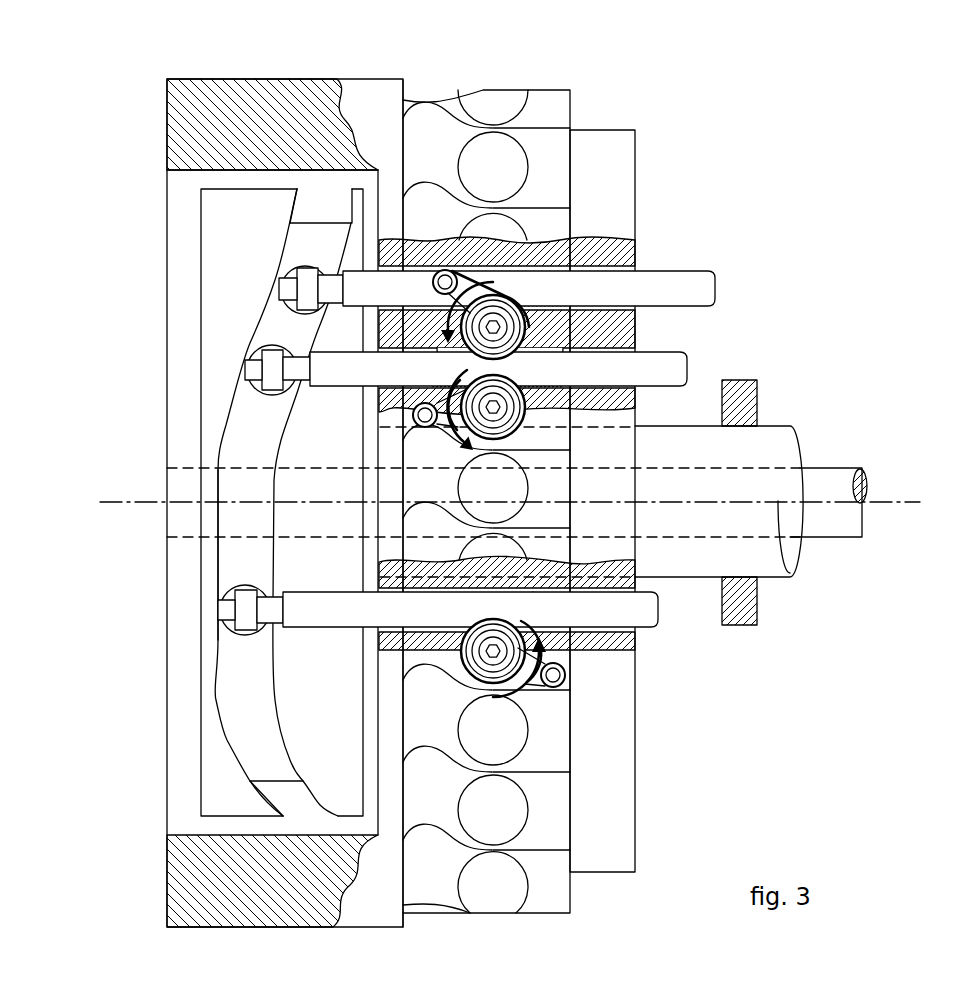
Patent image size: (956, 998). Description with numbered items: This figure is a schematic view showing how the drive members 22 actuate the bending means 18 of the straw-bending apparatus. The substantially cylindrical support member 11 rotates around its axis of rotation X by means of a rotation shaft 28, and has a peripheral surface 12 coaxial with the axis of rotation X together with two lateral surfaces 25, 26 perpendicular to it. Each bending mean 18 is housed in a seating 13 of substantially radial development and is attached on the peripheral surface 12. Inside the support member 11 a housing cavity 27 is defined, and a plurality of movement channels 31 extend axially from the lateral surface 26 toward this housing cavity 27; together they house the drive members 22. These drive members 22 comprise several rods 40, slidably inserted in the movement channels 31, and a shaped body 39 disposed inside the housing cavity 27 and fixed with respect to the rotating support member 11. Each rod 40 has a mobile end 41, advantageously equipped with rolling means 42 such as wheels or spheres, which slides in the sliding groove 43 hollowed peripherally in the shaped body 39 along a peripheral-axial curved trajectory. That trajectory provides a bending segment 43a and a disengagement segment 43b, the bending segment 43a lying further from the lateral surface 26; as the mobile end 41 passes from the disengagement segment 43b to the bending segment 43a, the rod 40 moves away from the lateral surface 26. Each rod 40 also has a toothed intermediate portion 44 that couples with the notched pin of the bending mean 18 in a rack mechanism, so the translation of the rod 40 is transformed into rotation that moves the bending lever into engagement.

The support member 11 is at (603, 102).
The peripheral surface 12 is at (517, 90).
The seating 13 is at (465, 147).
The bending means 18 is at (518, 289).
The drive members 22 is at (390, 210).
The lateral surface 25 is at (168, 93).
The lateral surface 26 is at (633, 840).
The housing cavity 27 is at (197, 168).
The rotation shaft 28 is at (830, 480).
The movement channels 31 is at (617, 265).
The shaped body 39 is at (186, 237).
The rods 40 is at (712, 288).
The mobile end 41 is at (288, 284).
The rolling means 42 is at (293, 303).
The sliding groove 43 is at (291, 802).
The bending segment 43a is at (238, 492).
The disengagement segment 43b is at (315, 245).
The toothed intermediate portion 44 is at (563, 304).
The axis of rotation X is at (887, 502).